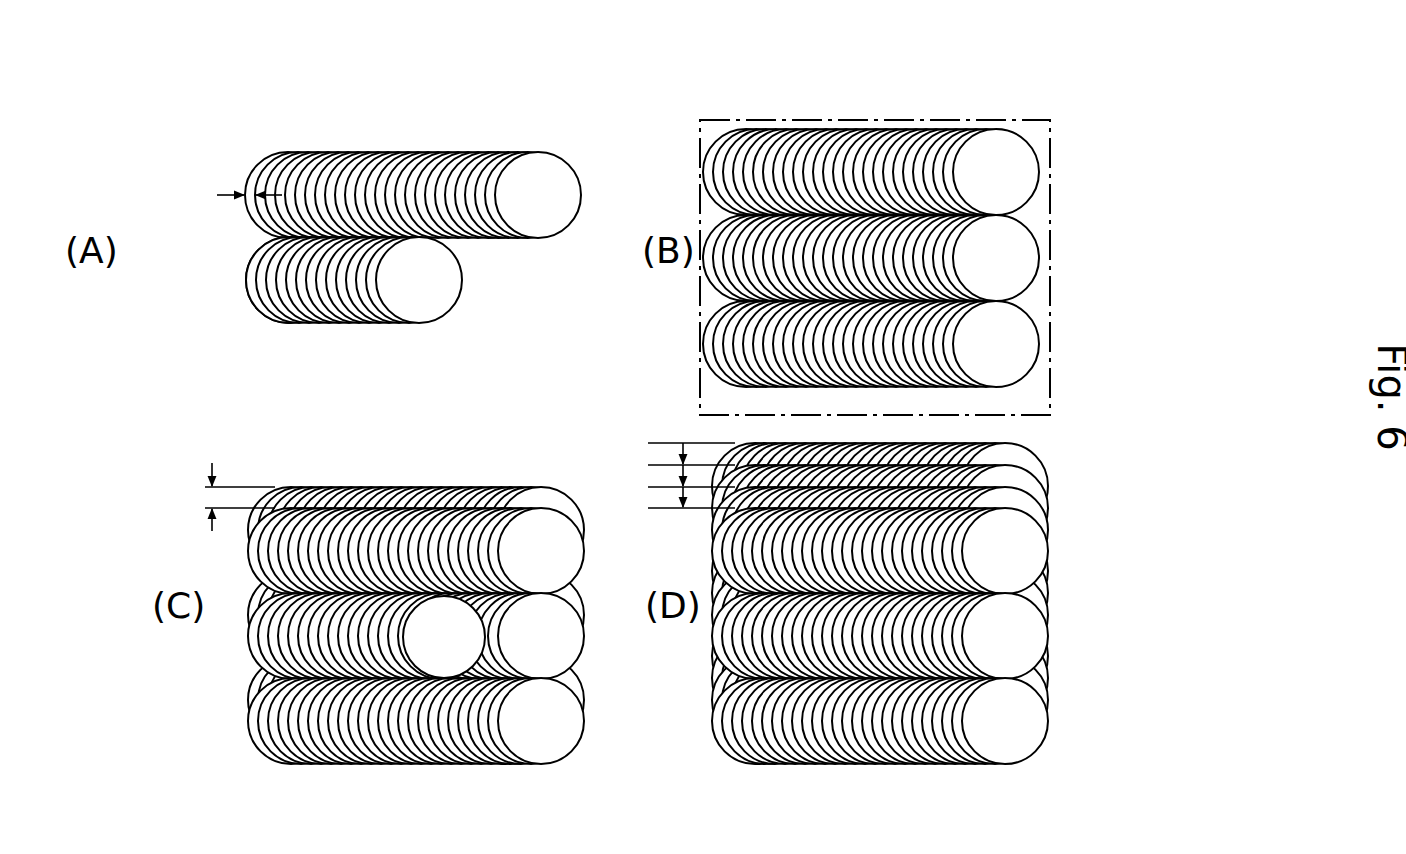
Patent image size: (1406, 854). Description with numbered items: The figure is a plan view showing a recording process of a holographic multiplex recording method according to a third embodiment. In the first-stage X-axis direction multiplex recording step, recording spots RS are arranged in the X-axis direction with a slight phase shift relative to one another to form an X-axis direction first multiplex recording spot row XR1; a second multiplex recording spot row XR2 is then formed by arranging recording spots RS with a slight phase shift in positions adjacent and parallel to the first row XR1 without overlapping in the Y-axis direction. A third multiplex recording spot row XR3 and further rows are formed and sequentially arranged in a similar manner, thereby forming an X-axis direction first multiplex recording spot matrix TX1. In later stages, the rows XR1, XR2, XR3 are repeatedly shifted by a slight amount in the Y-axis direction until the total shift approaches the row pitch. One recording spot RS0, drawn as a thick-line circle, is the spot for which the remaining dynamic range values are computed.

The X-axis direction first multiplex recording spot row XR1 is at (570, 139).
The X-axis direction second multiplex recording spot row XR2 is at (644, 307).
The X-axis direction third multiplex recording spot row XR3 is at (1043, 307).
The recording spot RS is at (247, 282).
The recording spot RS0 is at (404, 642).
The X-axis direction first multiplex recording spot matrix TX1 is at (1045, 415).